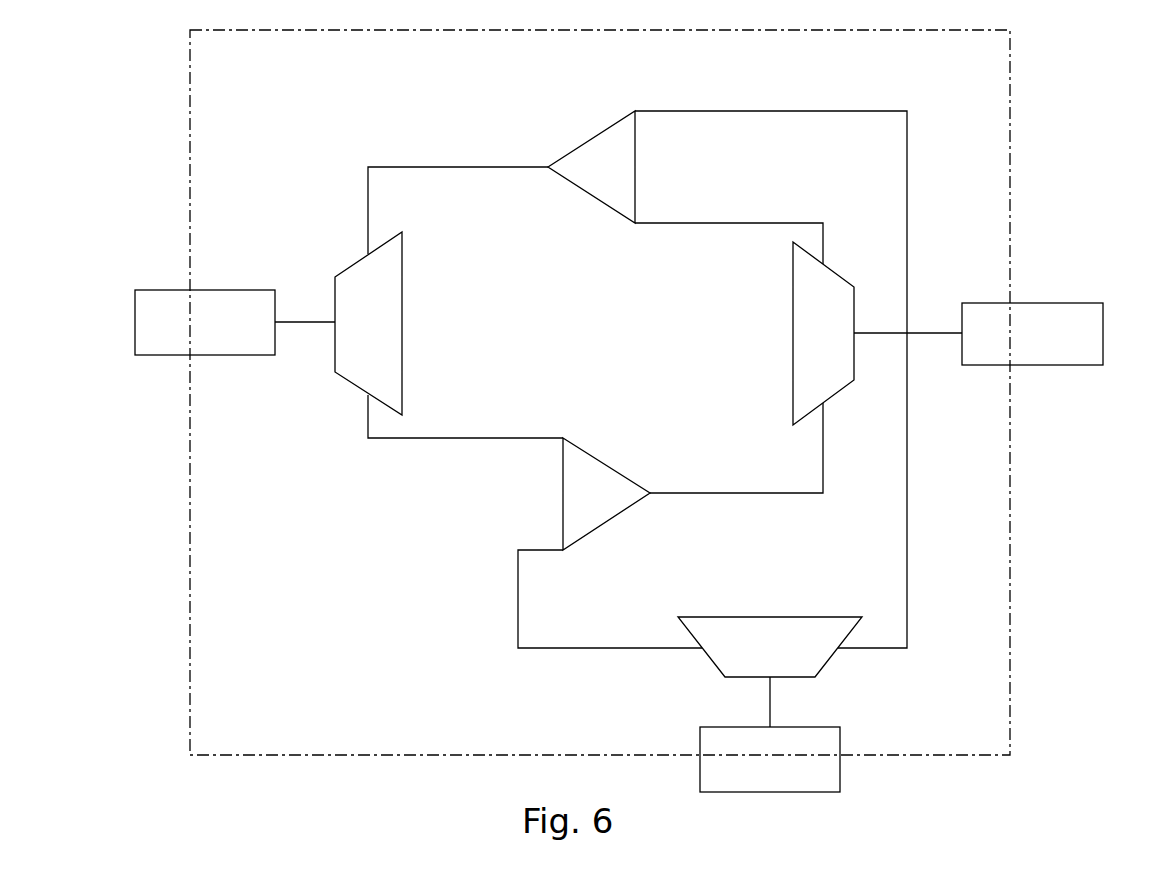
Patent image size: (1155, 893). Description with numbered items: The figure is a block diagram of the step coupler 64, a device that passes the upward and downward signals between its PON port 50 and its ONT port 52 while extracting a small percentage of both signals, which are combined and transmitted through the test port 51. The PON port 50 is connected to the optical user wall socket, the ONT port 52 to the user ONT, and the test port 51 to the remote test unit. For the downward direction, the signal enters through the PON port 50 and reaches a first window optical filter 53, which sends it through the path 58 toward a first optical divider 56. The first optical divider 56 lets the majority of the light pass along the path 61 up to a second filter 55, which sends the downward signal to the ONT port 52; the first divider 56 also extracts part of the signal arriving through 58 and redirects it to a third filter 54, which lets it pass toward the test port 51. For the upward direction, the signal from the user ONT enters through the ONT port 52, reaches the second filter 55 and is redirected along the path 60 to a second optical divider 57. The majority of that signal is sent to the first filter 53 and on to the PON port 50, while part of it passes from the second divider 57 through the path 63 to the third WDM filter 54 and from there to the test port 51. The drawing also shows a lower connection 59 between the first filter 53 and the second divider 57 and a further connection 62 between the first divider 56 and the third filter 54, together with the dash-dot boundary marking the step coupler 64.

The PON port 50 is at (235, 322).
The test port 51 is at (770, 734).
The ONT port 52 is at (978, 334).
The first window optical filter 53 is at (368, 323).
The third filter 54 is at (770, 647).
The second filter 55 is at (823, 333).
The first optical divider 56 is at (591, 167).
The second optical divider 57 is at (606, 494).
The downward signal path 58 is at (453, 167).
The duct 59 is at (472, 438).
The upward signal path 60 is at (722, 493).
The majority light path 61 is at (723, 223).
The duct 62 is at (737, 110).
The upward test path 63 is at (570, 648).
The step coupler 64 is at (1010, 73).